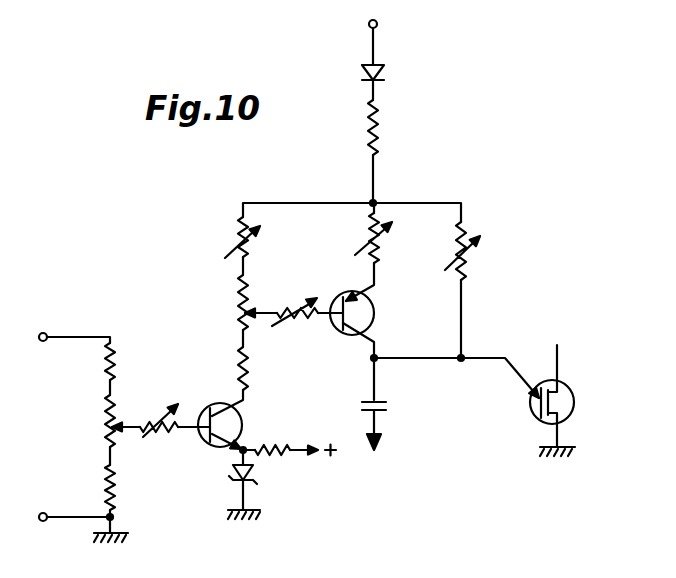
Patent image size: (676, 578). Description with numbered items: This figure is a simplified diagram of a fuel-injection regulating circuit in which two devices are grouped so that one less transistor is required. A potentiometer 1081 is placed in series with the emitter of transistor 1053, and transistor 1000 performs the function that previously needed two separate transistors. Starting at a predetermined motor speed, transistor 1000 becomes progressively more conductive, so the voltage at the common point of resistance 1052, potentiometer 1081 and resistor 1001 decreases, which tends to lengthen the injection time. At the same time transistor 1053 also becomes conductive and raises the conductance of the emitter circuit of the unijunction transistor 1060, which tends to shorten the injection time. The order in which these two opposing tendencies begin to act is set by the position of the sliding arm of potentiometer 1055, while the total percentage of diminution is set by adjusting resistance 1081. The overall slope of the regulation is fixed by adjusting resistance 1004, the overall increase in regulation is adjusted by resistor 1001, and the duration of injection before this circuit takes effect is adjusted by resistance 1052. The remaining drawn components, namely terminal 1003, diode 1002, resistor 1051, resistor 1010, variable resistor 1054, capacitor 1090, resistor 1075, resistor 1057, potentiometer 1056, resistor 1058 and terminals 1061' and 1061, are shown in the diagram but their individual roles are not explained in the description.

The supply terminal 1003 is at (397, 23).
The diode 1002 is at (398, 71).
The resistor 1051 is at (379, 141).
The resistor 1001 is at (249, 251).
The potentiometer 1055 is at (240, 300).
The resistor 1010 is at (249, 367).
The variable resistor 1054 is at (297, 324).
The potentiometer 1081 is at (388, 238).
The resistance 1052 is at (481, 251).
The transistor 1053 is at (375, 319).
The capacitor 1090 is at (387, 405).
The unijunction transistor 1060 is at (590, 393).
The transistor 1000 is at (241, 421).
The resistor 1075 is at (288, 447).
The resistance 1004 is at (161, 416).
The resistor 1057 is at (105, 362).
The potentiometer 1056 is at (105, 420).
The resistor 1058 is at (105, 481).
The input terminal 1061' is at (50, 326).
The input terminal 1061 is at (40, 531).